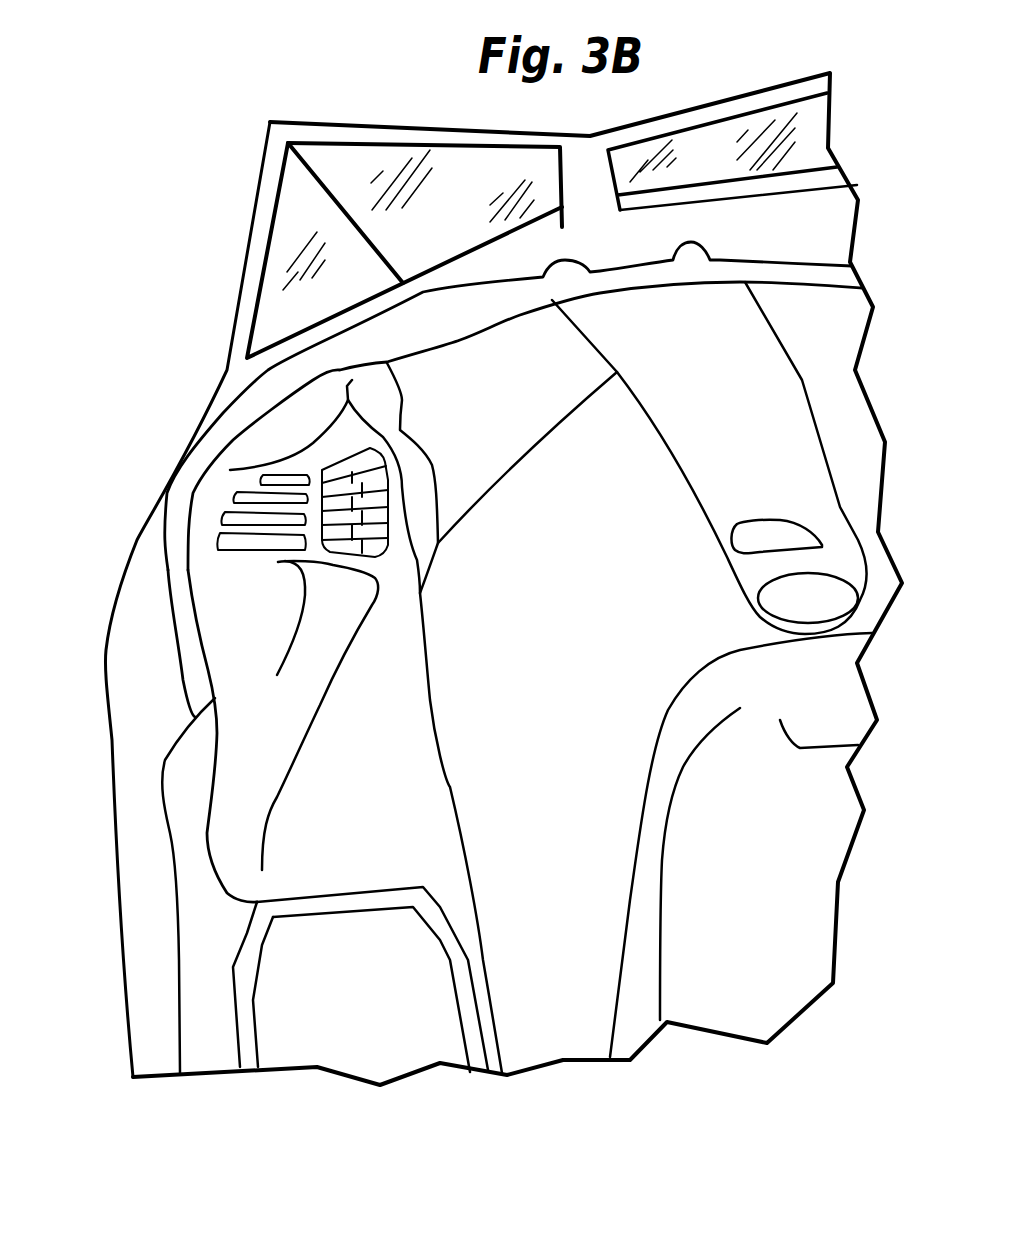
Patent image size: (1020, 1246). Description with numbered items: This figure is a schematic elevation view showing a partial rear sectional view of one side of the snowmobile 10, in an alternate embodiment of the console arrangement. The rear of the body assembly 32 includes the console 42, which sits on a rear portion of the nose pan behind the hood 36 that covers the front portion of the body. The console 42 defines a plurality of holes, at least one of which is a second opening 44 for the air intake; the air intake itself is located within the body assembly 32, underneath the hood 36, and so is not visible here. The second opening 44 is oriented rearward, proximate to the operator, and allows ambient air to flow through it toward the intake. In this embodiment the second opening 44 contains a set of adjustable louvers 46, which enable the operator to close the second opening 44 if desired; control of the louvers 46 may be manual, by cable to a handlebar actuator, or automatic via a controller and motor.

The snowmobile 10 is at (143, 293).
The body assembly 32 is at (137, 531).
The hood 36 is at (218, 413).
The console 42 is at (240, 649).
The second opening 44 is at (322, 530).
The louvers 46 is at (322, 498).